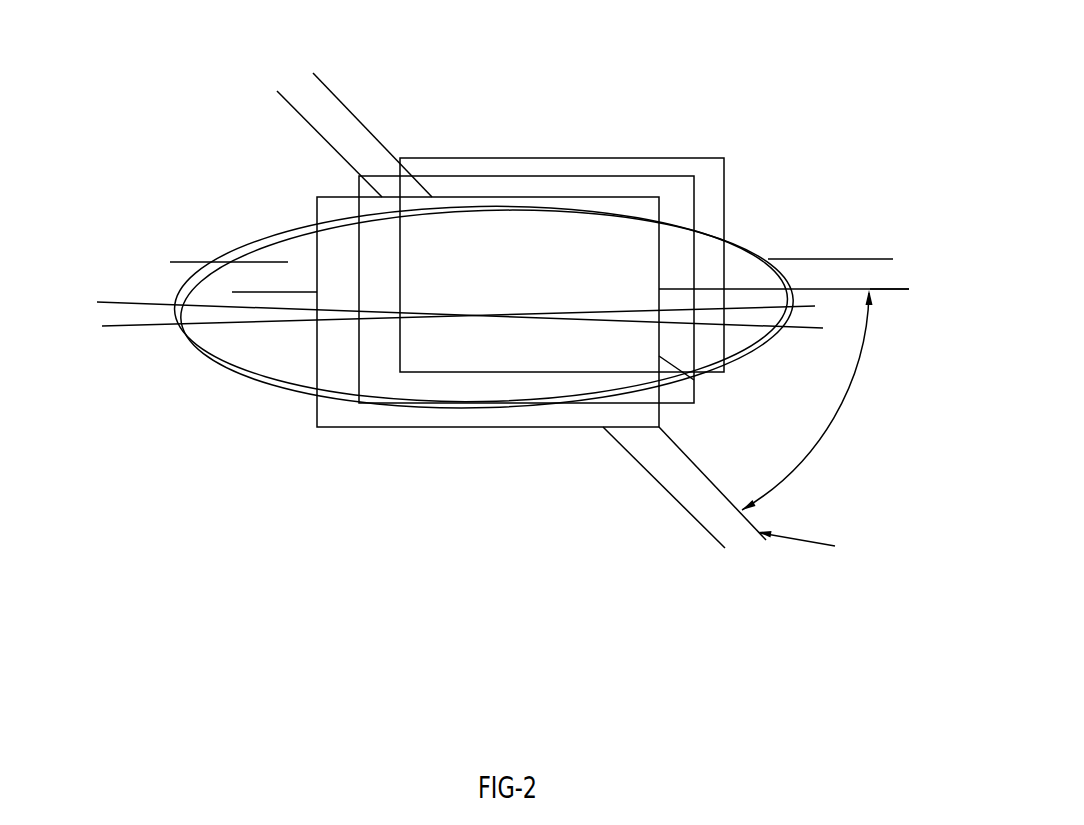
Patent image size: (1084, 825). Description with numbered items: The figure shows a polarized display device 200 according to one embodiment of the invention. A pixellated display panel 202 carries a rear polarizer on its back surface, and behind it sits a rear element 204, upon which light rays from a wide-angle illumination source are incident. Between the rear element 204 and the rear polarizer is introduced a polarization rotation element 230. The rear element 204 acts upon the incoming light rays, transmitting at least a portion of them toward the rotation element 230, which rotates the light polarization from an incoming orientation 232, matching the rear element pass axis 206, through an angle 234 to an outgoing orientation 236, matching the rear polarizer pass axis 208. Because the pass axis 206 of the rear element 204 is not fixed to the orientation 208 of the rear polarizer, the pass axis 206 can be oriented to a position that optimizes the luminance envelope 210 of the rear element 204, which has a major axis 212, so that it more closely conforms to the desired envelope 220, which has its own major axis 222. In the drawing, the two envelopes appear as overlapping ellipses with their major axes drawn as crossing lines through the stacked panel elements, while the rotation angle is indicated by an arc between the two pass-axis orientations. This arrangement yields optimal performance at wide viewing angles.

The display device 200 is at (618, 35).
The pixellated display panel 202 is at (362, 427).
The rear element 204 is at (725, 189).
The rear element pass axis 206 is at (848, 257).
The rear polarizer pass axis 208 is at (692, 515).
The luminance envelope 210 is at (227, 370).
The major axis 212 is at (122, 327).
The desired envelope 220 is at (237, 247).
The major axis 222 is at (132, 303).
The polarization rotation element 230 is at (677, 368).
The incoming orientation 232 is at (888, 289).
The angle 234 is at (837, 413).
The outgoing orientation 236 is at (811, 546).